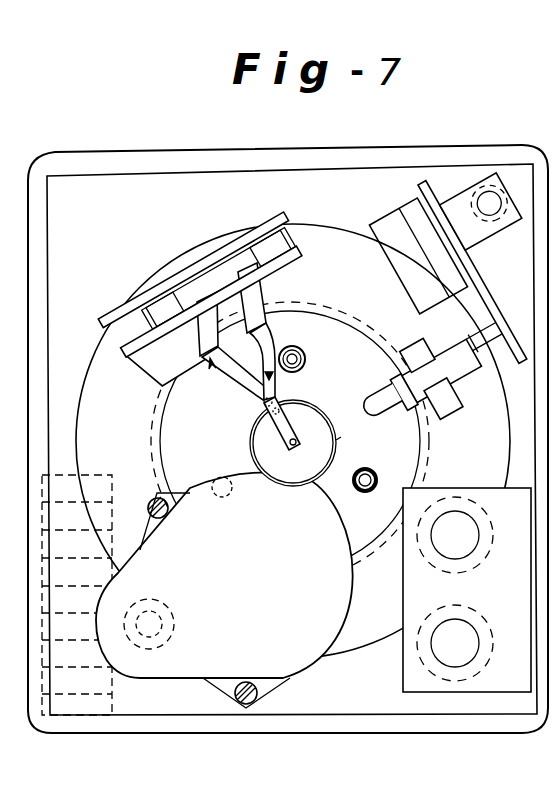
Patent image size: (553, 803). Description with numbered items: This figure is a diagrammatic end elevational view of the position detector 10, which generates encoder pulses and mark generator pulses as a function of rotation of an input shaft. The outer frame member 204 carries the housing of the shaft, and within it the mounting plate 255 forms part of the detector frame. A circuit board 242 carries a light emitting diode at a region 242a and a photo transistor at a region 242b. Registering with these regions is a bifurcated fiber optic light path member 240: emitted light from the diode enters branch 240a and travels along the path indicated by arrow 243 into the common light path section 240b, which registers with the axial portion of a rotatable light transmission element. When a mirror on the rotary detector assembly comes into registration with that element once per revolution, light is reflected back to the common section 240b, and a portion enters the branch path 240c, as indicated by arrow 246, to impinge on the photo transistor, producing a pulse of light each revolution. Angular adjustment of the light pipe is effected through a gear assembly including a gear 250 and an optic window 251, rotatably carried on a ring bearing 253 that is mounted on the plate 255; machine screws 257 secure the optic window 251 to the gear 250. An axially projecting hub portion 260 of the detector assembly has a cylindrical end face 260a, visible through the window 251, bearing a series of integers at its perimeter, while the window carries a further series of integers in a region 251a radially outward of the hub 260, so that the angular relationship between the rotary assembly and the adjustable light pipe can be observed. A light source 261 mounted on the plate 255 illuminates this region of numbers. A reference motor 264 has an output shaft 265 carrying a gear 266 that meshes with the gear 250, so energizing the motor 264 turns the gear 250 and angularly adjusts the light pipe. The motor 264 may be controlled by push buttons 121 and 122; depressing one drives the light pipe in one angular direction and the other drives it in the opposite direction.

The position detector 10 is at (470, 137).
The frame member 204 is at (257, 158).
The mounting plate 255 is at (143, 187).
The circuit board 242 is at (295, 246).
The region of circuit board 242a is at (230, 288).
The region of circuit board 242b is at (182, 322).
The bifurcated fiber optic light path member 240 is at (287, 337).
The branch of light path member 240a is at (292, 314).
The common light path section 240b is at (370, 407).
The branch path 240c is at (225, 372).
The arrow indicating light path 243 is at (290, 372).
The arrow indicating reflected light path 246 is at (252, 414).
The hub portion 260 is at (250, 442).
The cylindrical end face 260a is at (338, 441).
The light source 261 is at (378, 420).
The machine screws 257 is at (378, 478).
The ring bearing 253 is at (467, 573).
The optic window 251 is at (372, 532).
The region of optic window 251a is at (329, 490).
The gear 250 is at (361, 650).
The reference motor 264 is at (224, 623).
The output shaft 265 is at (168, 606).
The gear 266 is at (160, 600).
The push button 121 is at (462, 542).
The push button 122 is at (465, 635).